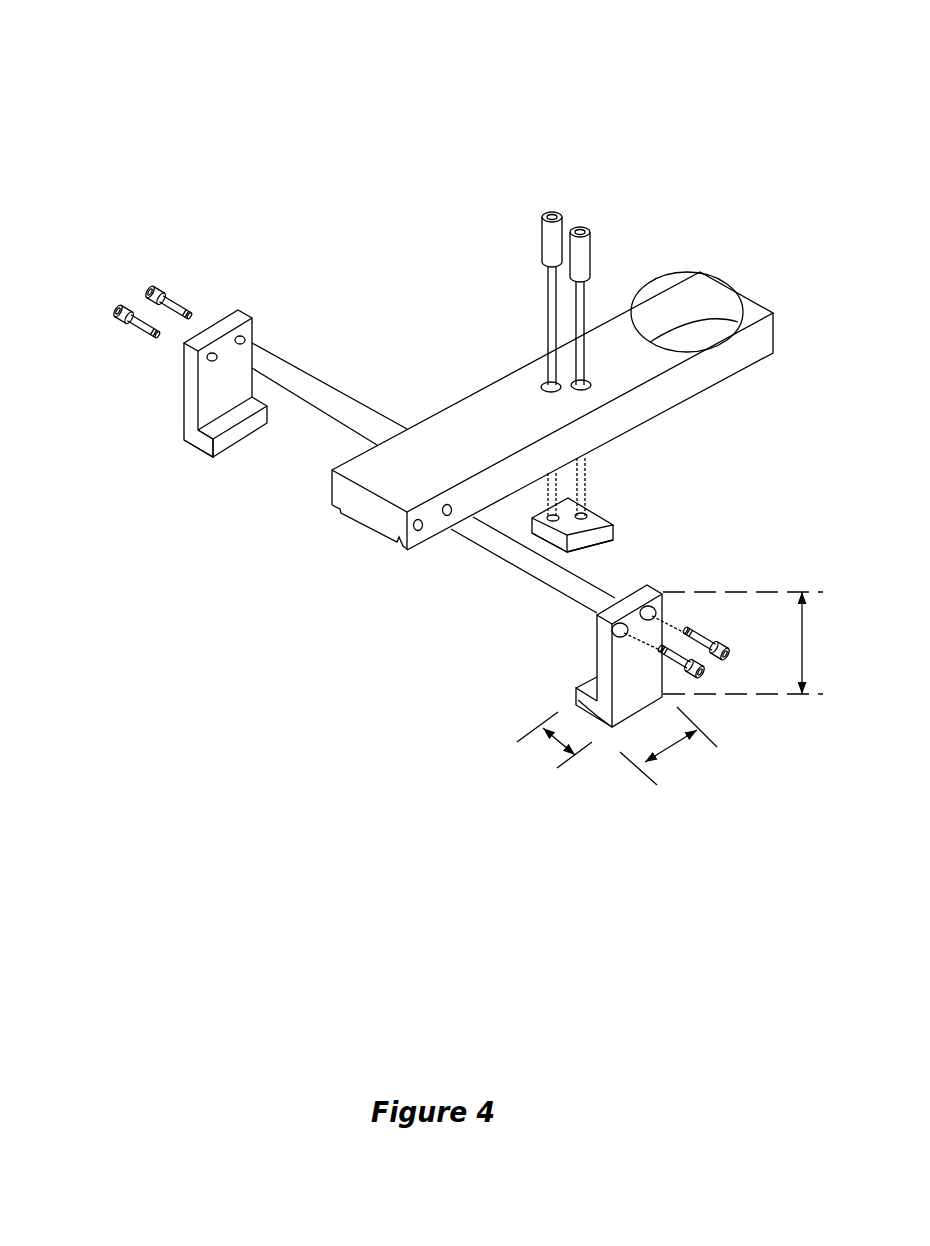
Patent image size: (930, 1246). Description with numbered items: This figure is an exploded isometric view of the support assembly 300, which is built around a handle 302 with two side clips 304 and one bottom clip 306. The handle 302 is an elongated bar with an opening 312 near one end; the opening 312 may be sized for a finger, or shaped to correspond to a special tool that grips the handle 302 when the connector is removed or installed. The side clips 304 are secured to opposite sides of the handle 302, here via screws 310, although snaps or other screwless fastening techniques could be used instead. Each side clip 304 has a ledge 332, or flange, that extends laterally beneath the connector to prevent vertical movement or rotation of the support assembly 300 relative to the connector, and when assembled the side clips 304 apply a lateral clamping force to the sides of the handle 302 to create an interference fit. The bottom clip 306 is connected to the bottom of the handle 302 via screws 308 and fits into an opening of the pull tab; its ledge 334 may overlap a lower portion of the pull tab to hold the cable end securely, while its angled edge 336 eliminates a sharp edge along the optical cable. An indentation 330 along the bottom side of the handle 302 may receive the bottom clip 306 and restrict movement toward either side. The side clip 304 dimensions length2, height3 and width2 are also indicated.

The support assembly 300 is at (112, 52).
The handle 302 is at (529, 428).
The side clip 304 is at (399, 518).
The bottom clip 306 is at (681, 520).
The screws 308 is at (558, 222).
The screws 310 is at (145, 289).
The opening 312 is at (698, 310).
The indentation 330 is at (355, 542).
The ledge 332 is at (200, 464).
The ledge 334 is at (624, 536).
The angled edge 336 is at (580, 557).